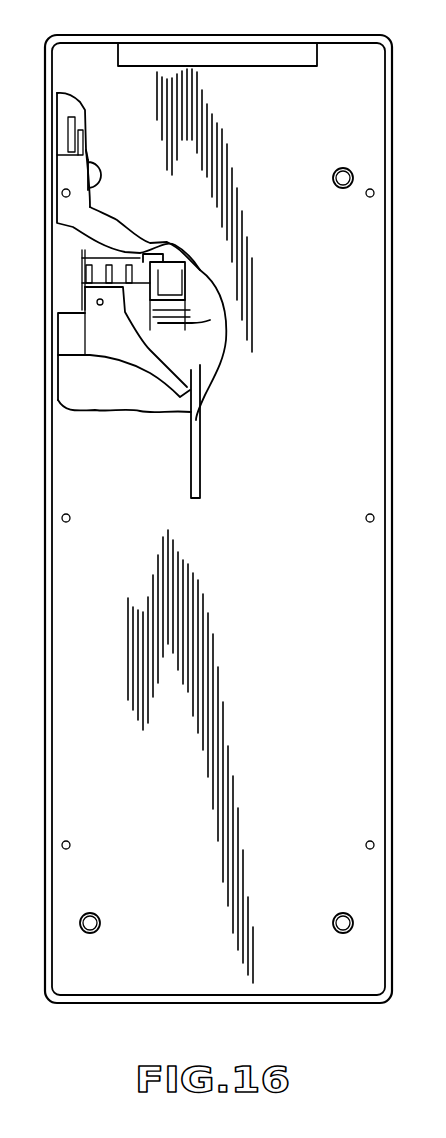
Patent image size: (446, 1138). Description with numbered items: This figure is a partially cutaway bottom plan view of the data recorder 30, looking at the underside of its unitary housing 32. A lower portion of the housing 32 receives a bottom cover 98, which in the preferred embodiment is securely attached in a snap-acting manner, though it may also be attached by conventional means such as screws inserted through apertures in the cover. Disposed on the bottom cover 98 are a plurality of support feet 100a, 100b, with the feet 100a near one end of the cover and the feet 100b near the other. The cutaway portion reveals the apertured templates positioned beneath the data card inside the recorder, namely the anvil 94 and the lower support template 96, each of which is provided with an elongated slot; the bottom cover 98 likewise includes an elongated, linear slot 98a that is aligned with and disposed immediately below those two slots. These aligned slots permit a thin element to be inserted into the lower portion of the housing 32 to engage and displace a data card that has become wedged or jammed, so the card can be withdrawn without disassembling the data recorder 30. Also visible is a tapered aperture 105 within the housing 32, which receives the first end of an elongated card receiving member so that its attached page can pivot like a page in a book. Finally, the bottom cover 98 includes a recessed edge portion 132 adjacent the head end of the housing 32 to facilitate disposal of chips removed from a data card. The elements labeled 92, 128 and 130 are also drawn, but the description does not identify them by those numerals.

The data recorder 30 is at (99, 30).
The housing 32 is at (58, 1006).
The recessed edge portion 132 is at (270, 62).
The support foot 100b is at (108, 150).
The support foot 100a is at (90, 934).
The latch plate 92 is at (98, 220).
The anvil 94 is at (122, 336).
The lower support template 96 is at (108, 400).
The bottom cover 98 is at (158, 812).
The elongated linear slot 98a is at (224, 447).
The tapered aperture 105 is at (190, 297).
The contact strip 128 is at (180, 325).
The lever arm 130 is at (214, 325).